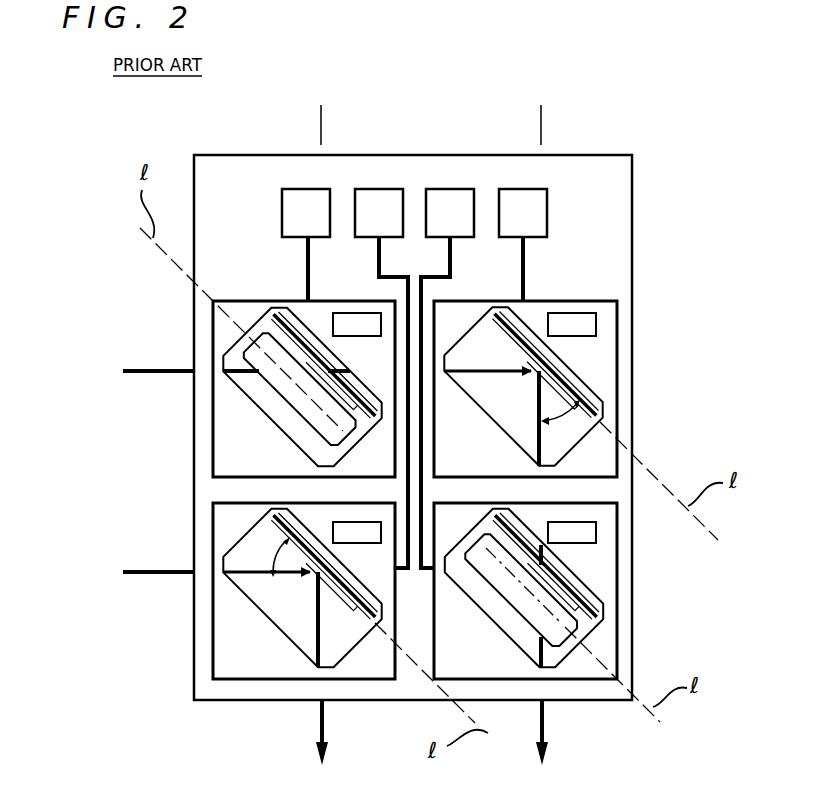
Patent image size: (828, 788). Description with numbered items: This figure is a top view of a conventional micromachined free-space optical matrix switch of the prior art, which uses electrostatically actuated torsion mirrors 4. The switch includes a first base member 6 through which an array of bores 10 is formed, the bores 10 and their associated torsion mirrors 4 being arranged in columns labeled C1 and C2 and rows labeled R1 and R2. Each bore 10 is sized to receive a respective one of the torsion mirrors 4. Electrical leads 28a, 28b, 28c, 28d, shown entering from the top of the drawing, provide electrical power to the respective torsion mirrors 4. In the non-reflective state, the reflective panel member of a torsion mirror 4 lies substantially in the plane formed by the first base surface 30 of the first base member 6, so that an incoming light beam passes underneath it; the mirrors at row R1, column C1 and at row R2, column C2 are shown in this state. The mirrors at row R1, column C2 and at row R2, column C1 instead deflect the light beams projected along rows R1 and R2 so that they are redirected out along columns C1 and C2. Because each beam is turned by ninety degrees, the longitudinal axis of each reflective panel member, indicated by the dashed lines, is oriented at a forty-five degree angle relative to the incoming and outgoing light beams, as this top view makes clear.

The torsion mirror 4 is at (283, 388).
The first base member 6 is at (617, 227).
The bore 10 is at (518, 411).
The electrical lead 28a is at (293, 189).
The electrical lead 28b is at (381, 188).
The electrical lead 28c is at (452, 189).
The electrical lead 28d is at (553, 188).
The first base surface 30 is at (253, 248).
The row R1 is at (138, 374).
The row R2 is at (138, 574).
The column C1 is at (323, 106).
The column C2 is at (548, 106).